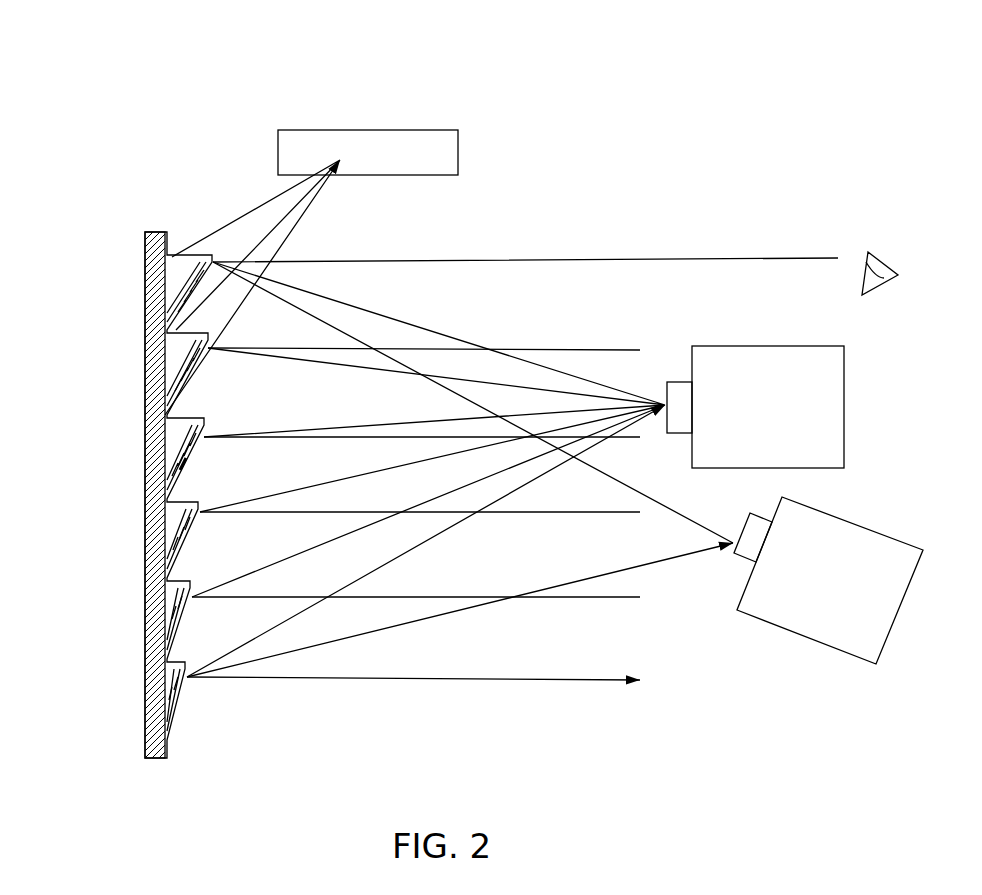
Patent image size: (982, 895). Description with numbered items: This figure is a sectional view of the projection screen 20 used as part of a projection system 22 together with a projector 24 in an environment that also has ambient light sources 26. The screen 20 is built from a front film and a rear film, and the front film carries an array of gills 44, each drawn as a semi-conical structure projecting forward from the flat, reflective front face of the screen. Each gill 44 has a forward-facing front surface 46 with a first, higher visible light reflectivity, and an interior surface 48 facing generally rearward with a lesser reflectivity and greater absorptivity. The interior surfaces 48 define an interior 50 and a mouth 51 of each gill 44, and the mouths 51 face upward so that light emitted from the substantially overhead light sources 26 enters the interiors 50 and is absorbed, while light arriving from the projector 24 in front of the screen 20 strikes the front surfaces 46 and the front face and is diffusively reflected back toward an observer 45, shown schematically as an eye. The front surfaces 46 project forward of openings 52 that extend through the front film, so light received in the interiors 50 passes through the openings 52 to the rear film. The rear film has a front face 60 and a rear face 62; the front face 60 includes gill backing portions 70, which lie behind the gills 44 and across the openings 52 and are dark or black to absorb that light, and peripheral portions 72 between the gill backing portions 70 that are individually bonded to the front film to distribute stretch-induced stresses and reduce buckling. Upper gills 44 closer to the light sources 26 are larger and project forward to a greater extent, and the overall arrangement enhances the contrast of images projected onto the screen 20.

The projection screen 20 is at (90, 248).
The projection system 22 is at (728, 92).
The projector 24 is at (817, 346).
The light sources 26 is at (458, 153).
The gills 44 is at (205, 513).
The observer 45 is at (893, 268).
The front surface 46 is at (186, 458).
The interior surface 48 is at (200, 416).
The interior 50 is at (165, 398).
The mouth 51 is at (245, 265).
The openings 52 is at (145, 512).
The front face 60 is at (145, 549).
The rear face 62 is at (140, 637).
The gill backing portions 70 is at (143, 366).
The peripheral portions 72 is at (145, 298).